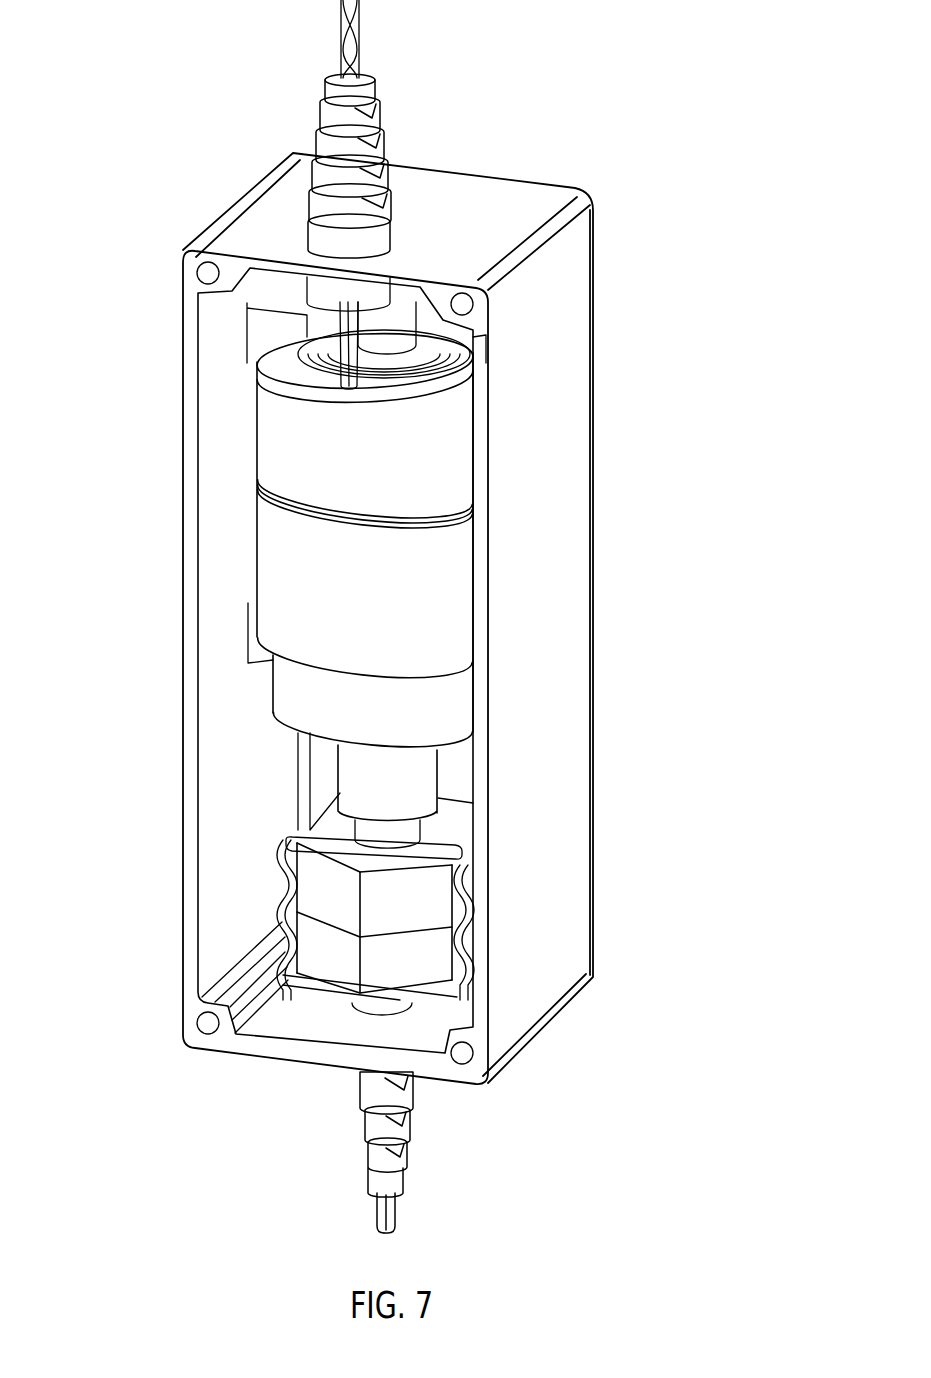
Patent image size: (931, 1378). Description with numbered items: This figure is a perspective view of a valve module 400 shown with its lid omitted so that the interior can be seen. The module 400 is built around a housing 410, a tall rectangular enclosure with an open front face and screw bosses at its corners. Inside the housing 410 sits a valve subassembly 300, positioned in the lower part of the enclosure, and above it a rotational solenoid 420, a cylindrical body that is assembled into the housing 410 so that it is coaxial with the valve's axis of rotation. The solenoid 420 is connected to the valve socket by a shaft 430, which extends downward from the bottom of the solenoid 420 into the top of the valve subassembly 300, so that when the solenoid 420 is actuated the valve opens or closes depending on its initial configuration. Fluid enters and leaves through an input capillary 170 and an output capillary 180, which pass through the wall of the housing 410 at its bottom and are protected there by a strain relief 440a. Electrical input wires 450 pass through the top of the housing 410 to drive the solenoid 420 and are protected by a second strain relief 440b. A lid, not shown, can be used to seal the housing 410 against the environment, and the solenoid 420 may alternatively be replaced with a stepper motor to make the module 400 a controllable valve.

The valve module 400 is at (672, 123).
The housing 410 is at (183, 640).
The rotational solenoid 420 is at (257, 552).
The shaft 430 is at (360, 830).
The valve subassembly 300 is at (280, 912).
The strain relief 440a is at (360, 1128).
The strain relief 440b is at (318, 125).
The electrical input wires 450 is at (363, 41).
The input capillary 170 is at (375, 1213).
The output capillary 180 is at (398, 1213).